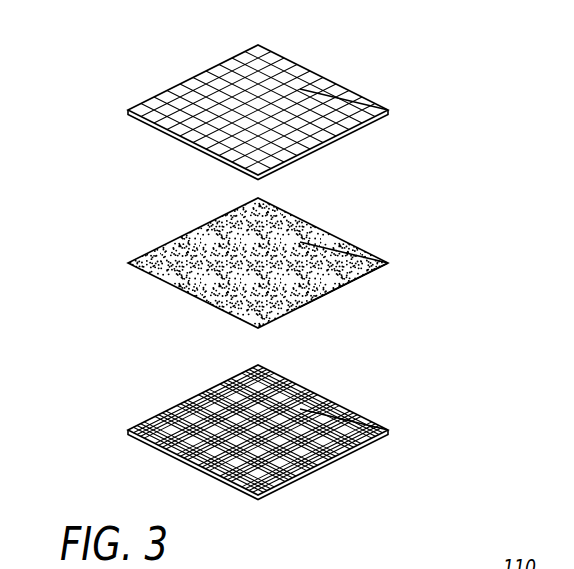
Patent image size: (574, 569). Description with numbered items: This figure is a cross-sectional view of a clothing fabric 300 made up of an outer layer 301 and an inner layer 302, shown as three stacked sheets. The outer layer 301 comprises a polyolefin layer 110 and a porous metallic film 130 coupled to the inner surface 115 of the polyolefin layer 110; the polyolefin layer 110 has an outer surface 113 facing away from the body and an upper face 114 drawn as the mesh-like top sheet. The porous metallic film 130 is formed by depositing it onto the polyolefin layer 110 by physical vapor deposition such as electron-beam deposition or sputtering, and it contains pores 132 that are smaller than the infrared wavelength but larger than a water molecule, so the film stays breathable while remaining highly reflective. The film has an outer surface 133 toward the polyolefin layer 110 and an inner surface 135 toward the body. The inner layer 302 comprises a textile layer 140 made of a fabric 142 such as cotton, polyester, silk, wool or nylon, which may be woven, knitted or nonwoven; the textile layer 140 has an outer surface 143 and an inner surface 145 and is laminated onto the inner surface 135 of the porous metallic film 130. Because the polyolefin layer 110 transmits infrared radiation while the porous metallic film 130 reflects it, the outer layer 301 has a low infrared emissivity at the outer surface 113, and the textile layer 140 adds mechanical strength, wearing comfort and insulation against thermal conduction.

The clothing fabric 300 is at (294, 260).
The outer layer 301 is at (234, 175).
The inner layer 302 is at (244, 416).
The polyolefin layer 110 is at (279, 98).
The top surface of mesh layer 114 is at (307, 98).
The outer surface of the polyolefin layer 113 is at (350, 117).
The inner surface of the polyolefin layer 115 is at (350, 133).
The porous metallic film 130 is at (279, 251).
The pores 132 is at (275, 267).
The outer surface of the porous metallic film 133 is at (350, 270).
The inner surface of the porous metallic film 135 is at (350, 288).
The textile layer 140 is at (279, 416).
The fabric 142 is at (308, 412).
The outer surface of the textile layer 143 is at (350, 437).
The inner surface of the textile layer 145 is at (279, 467).